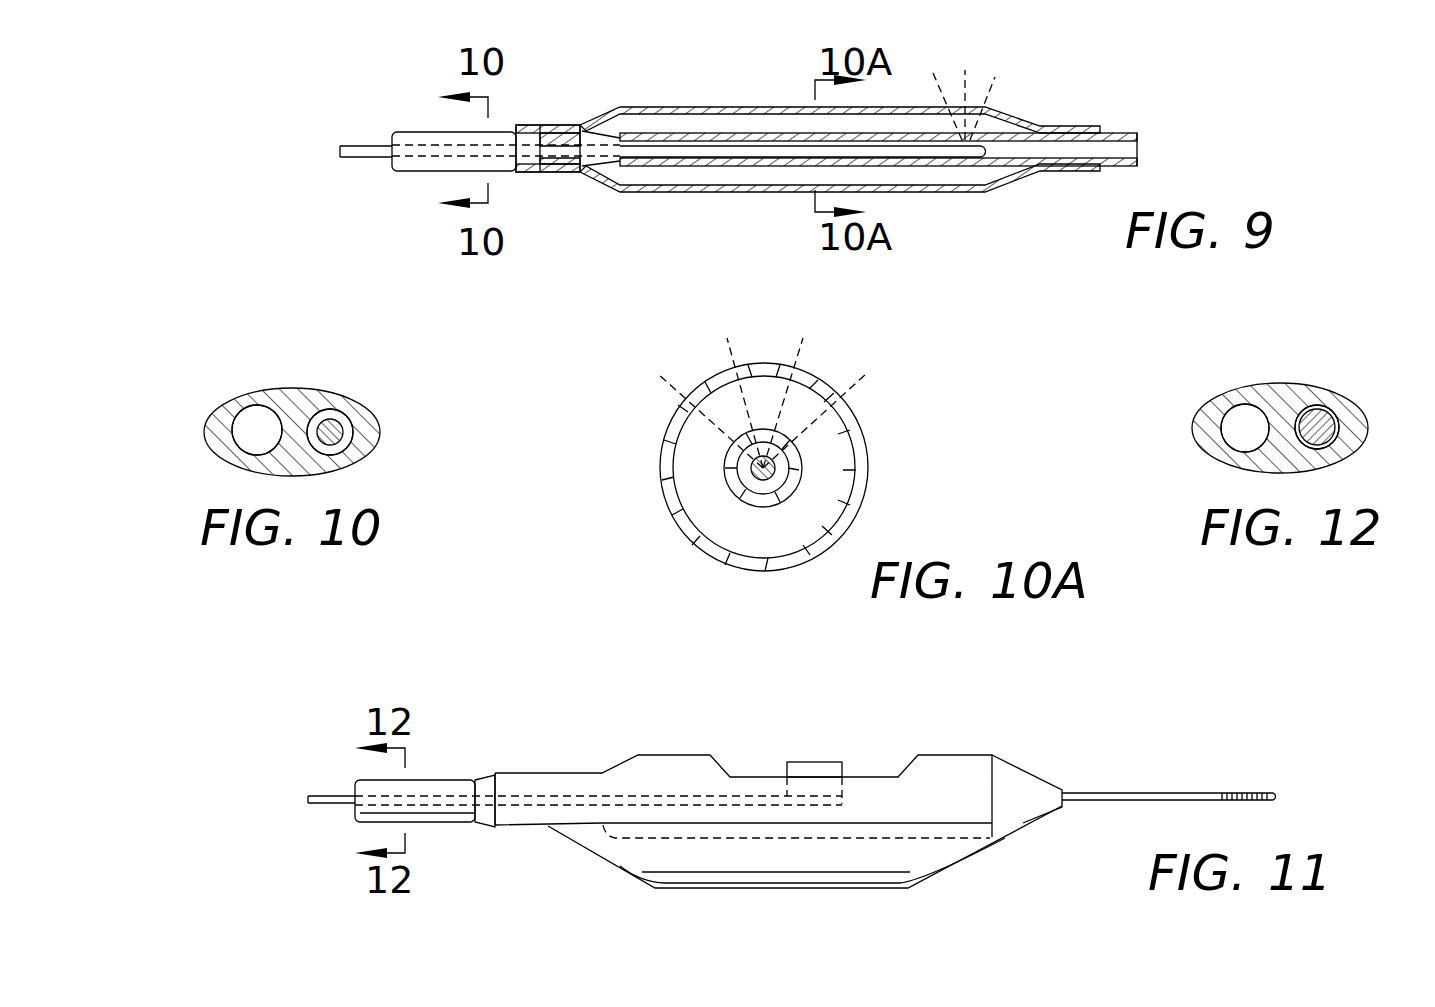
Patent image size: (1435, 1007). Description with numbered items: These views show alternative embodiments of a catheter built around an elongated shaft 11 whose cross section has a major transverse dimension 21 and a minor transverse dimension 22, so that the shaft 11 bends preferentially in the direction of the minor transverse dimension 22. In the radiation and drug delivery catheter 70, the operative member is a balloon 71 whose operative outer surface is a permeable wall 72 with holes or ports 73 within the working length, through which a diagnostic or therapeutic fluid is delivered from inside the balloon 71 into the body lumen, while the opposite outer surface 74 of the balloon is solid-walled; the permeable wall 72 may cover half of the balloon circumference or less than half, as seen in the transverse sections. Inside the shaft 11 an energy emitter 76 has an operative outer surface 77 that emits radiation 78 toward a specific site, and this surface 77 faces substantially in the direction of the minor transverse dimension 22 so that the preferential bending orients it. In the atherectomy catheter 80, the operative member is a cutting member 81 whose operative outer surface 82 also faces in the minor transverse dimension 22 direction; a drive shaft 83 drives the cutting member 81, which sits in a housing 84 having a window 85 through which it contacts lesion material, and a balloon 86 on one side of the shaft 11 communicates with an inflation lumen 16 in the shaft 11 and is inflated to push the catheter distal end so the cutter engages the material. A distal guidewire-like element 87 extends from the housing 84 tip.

In FIG. 10, the elongated shaft 11 is at (228, 405).
In FIG. 10A, the elongated shaft 11 is at (740, 490).
In FIG. 12, the elongated shaft 11 is at (1212, 400).
In FIG. 11, the elongated shaft 11 is at (460, 778).
In FIG. 9, the inflation lumen 16 is at (553, 153).
In FIG. 10, the inflation lumen 16 is at (248, 445).
In FIG. 12, the inflation lumen 16 is at (1235, 440).
In FIG. 11, the inflation lumen 16 is at (352, 812).
In FIG. 10, the major transverse dimension 21 is at (298, 388).
In FIG. 12, the major transverse dimension 21 is at (1288, 382).
In FIG. 9, the minor transverse dimension 22 is at (423, 150).
In FIG. 10, the minor transverse dimension 22 is at (378, 438).
In FIG. 12, the minor transverse dimension 22 is at (1365, 428).
In FIG. 11, the minor transverse dimension 22 is at (462, 800).
In FIG. 9, the catheter 70 is at (566, 100).
In FIG. 9, the balloon 71 is at (1025, 128).
In FIG. 10A, the balloon 71 is at (660, 464).
In FIG. 9, the permeable wall 72 is at (680, 107).
In FIG. 10A, the permeable wall 72 is at (806, 380).
In FIG. 9, the ports 73 is at (753, 106).
In FIG. 10A, the ports 73 is at (712, 383).
In FIG. 9, the opposite outer surface 74 is at (690, 192).
In FIG. 10A, the opposite outer surface 74 is at (685, 525).
In FIG. 9, the emitter 76 is at (368, 145).
In FIG. 10, the emitter 76 is at (340, 422).
In FIG. 10A, the emitter 76 is at (777, 477).
In FIG. 9, the operative outer surface 77 is at (935, 140).
In FIG. 10A, the operative outer surface 77 is at (763, 462).
In FIG. 9, the radiation 78 is at (988, 94).
In FIG. 10A, the radiation 78 is at (855, 388).
In FIG. 11, the atherectomy catheter 80 is at (555, 756).
In FIG. 11, the cutting member 81 is at (843, 786).
In FIG. 11, the operative outer surface 82 is at (815, 762).
In FIG. 12, the drive shaft 83 is at (1340, 418).
In FIG. 11, the drive shaft 83 is at (322, 795).
In FIG. 11, the housing 84 is at (665, 755).
In FIG. 11, the window 85 is at (897, 775).
In FIG. 11, the balloon 86 is at (958, 866).
In FIG. 11, the guidewire 87 is at (1170, 790).